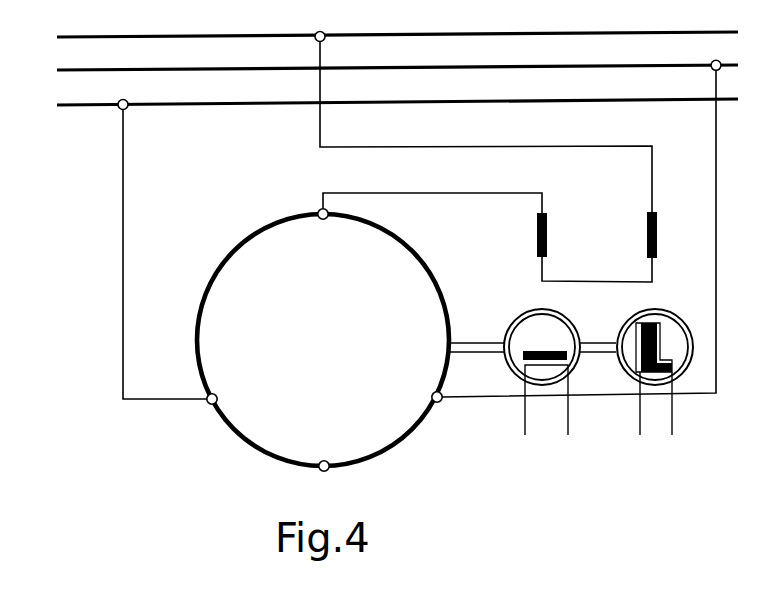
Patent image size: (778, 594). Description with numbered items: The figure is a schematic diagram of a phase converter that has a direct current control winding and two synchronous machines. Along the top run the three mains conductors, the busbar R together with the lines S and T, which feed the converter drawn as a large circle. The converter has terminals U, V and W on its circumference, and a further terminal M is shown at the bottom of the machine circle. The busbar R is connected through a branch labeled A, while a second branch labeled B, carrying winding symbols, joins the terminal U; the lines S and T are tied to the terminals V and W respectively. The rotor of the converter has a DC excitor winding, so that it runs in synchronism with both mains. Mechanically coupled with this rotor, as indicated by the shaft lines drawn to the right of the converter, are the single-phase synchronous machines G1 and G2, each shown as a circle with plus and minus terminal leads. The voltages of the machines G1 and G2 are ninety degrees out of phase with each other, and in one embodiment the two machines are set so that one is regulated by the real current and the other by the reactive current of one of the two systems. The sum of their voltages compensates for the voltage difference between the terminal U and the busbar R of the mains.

The busbar R is at (382, 36).
The three-phase supply line S is at (382, 70).
The three-phase supply line T is at (382, 104).
The switch contact A is at (488, 162).
The switch contact B is at (435, 225).
The terminal U is at (312, 199).
The motor terminal V is at (446, 414).
The motor terminal W is at (199, 418).
The motor terminal M (neutral/midpoint) M is at (324, 485).
The single-phase synchronous machine G1 is at (542, 389).
The single-phase synchronous machine G2 is at (655, 389).